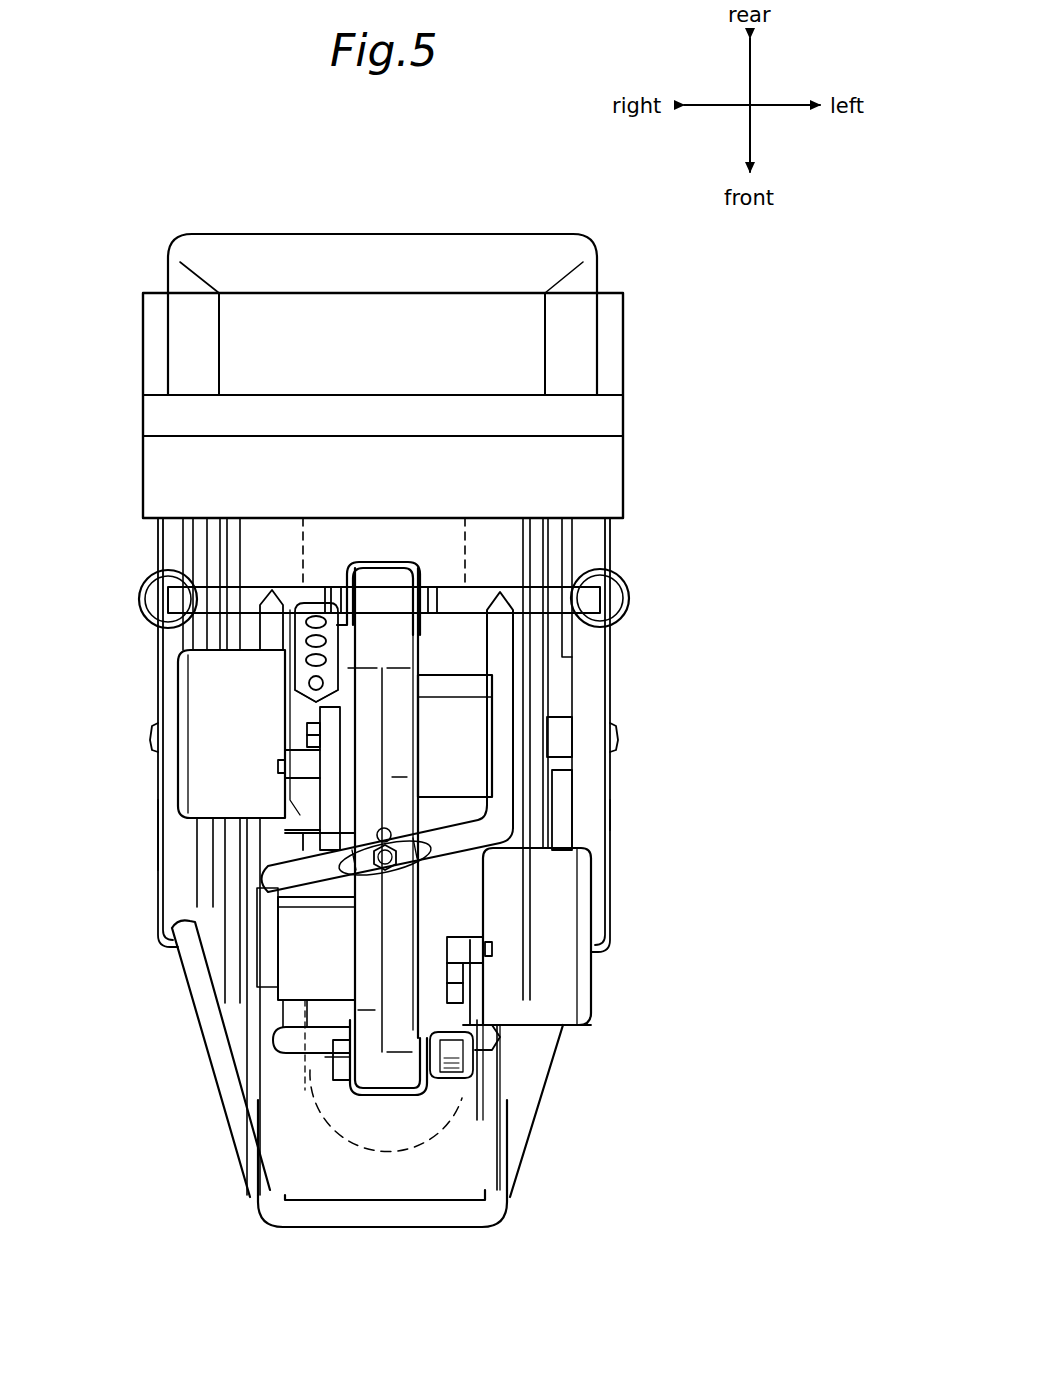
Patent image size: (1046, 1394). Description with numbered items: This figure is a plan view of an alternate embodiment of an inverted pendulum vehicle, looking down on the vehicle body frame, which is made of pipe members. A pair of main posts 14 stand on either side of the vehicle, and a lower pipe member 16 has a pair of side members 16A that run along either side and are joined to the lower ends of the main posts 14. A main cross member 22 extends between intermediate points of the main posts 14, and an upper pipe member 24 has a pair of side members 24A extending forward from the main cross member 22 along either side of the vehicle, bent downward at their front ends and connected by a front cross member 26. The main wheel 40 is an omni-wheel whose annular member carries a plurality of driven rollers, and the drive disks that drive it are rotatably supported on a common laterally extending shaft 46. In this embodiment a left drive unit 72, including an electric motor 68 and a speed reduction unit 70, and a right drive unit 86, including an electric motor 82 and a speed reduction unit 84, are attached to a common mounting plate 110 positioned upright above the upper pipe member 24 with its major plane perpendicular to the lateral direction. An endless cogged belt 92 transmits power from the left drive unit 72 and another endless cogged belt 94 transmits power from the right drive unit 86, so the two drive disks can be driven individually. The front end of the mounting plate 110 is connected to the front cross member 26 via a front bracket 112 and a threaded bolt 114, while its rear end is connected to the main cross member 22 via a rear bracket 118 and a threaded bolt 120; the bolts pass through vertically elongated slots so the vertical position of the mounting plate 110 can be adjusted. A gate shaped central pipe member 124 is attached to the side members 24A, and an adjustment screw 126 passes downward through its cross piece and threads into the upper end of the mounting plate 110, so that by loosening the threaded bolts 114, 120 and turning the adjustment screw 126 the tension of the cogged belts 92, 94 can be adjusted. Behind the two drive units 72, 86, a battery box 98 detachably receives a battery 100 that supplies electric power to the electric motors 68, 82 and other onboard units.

The battery 100 is at (582, 331).
The battery box 98 is at (612, 470).
The main cross member 22 is at (512, 585).
The main posts 14 is at (148, 586).
The lower pipe member 16 is at (612, 716).
The side members 16A is at (170, 868).
The rear bracket 118 is at (383, 565).
The threaded bolt 120 is at (430, 585).
The mounting plate 110 is at (378, 690).
The speed reduction unit 70 is at (448, 710).
The electric motor 68 is at (184, 672).
The left drive unit 72 is at (280, 780).
The common shaft 46 is at (558, 718).
The endless cogged belt 92 is at (540, 778).
The central pipe member 124 is at (500, 862).
The adjustment screw 126 is at (380, 872).
The right drive unit 86 is at (565, 918).
The electric motor 82 is at (586, 1000).
The speed reduction unit 84 is at (287, 992).
The front cross member 26 is at (308, 1050).
The threaded bolt 114 is at (318, 1068).
The front bracket 112 is at (398, 1095).
The main wheel 40 is at (440, 1132).
The endless cogged belt 94 is at (232, 962).
The upper pipe member 24 is at (510, 1197).
The side members 24A is at (500, 1125).